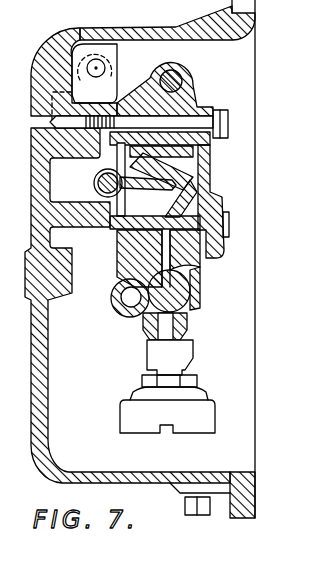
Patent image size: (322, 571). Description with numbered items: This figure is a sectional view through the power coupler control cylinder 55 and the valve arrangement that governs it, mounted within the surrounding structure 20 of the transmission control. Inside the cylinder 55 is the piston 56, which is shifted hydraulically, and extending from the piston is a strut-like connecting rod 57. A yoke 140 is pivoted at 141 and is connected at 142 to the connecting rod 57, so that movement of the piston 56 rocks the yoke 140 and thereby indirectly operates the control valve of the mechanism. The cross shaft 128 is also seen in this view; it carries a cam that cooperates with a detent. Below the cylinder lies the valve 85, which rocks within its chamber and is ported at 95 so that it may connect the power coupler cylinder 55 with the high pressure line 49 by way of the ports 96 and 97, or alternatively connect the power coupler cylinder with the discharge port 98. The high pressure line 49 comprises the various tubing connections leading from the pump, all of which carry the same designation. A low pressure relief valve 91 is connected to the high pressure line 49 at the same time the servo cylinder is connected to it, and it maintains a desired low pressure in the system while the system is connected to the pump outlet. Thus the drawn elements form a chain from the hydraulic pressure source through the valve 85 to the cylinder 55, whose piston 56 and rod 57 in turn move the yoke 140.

The housing 20 is at (127, 27).
The yoke pivot 141 is at (97, 50).
The yoke 140 is at (118, 92).
The cross shaft 128 is at (185, 80).
The power coupler control cylinder 55 is at (215, 148).
The piston 56 is at (212, 182).
The connecting rod 57 is at (129, 207).
The yoke-to-rod connection 142 is at (98, 182).
The port 96 is at (121, 274).
The port 97 is at (213, 264).
The valve port 95 is at (180, 287).
The discharge port 98 is at (197, 300).
The high pressure line 49 is at (117, 304).
The valve 85 is at (143, 322).
The low pressure relief valve 91 is at (200, 394).